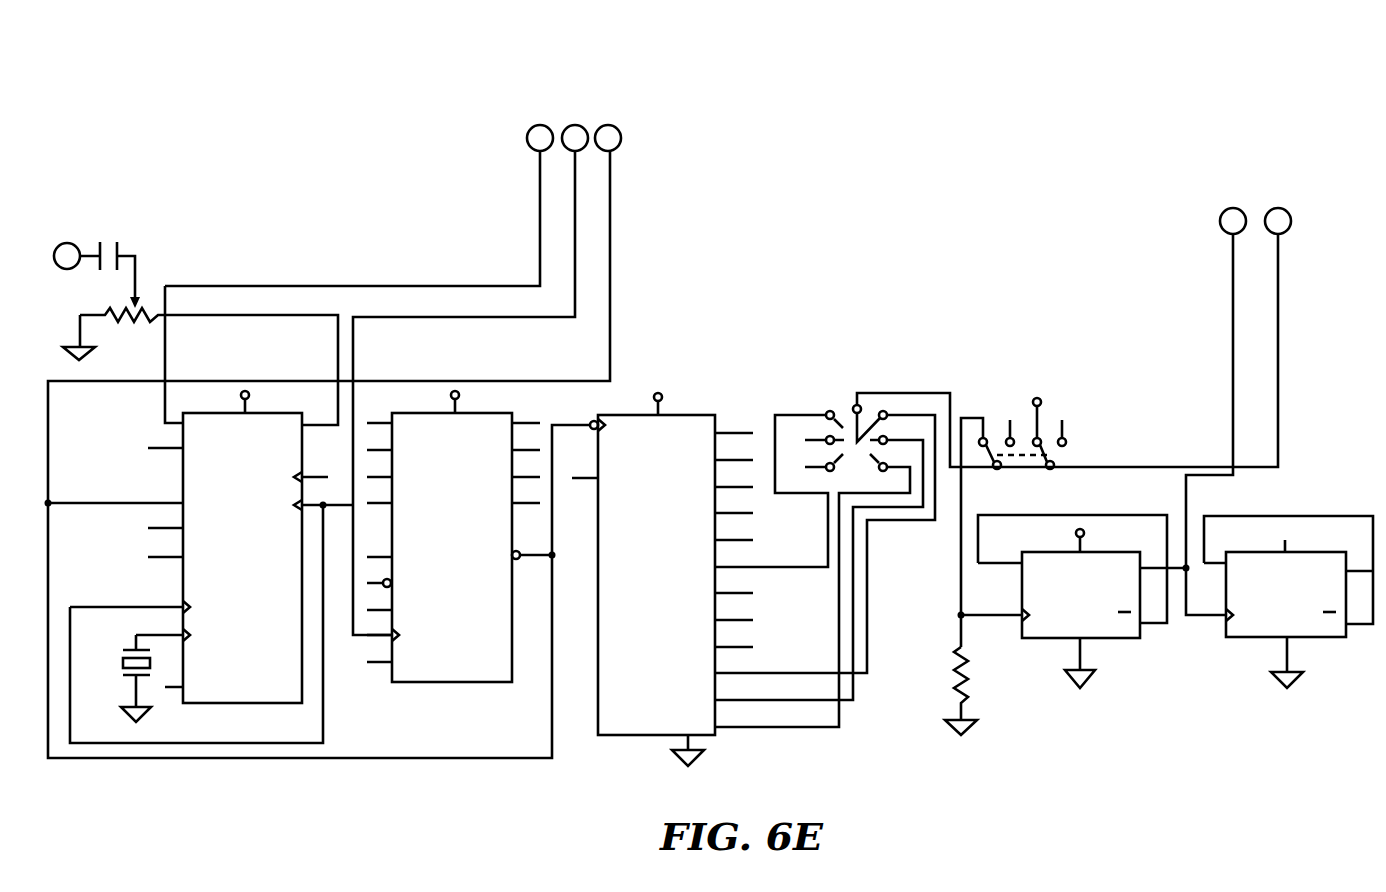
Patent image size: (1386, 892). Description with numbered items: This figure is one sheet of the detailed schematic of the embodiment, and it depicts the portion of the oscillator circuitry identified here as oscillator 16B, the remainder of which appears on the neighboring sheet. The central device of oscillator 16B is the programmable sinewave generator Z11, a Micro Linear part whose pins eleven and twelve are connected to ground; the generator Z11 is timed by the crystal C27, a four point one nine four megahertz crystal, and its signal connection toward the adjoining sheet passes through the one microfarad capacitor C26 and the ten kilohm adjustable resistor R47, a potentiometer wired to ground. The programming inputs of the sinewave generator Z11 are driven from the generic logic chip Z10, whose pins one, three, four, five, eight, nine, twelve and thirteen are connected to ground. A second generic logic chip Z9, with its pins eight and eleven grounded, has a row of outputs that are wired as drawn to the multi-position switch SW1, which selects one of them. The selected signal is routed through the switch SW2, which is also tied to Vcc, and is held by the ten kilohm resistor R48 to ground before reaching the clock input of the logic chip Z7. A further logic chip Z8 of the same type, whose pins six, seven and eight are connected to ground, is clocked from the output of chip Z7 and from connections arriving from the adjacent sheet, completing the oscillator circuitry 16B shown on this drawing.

The oscillator 16B is at (205, 211).
The ML2036 programmable sinewave generator Z11 is at (199, 563).
The 4516 chip Z10 is at (461, 547).
The 4020 chip Z9 is at (750, 576).
The 4013 chip Z7 is at (1084, 588).
The 4013 chip Z8 is at (1288, 589).
The adjustable resistor R47 is at (114, 328).
The resistor R48 is at (981, 691).
The capacitor C26 is at (107, 256).
The crystal C27 is at (115, 678).
The switch SW1 is at (1027, 362).
The switch SW2 is at (1034, 510).